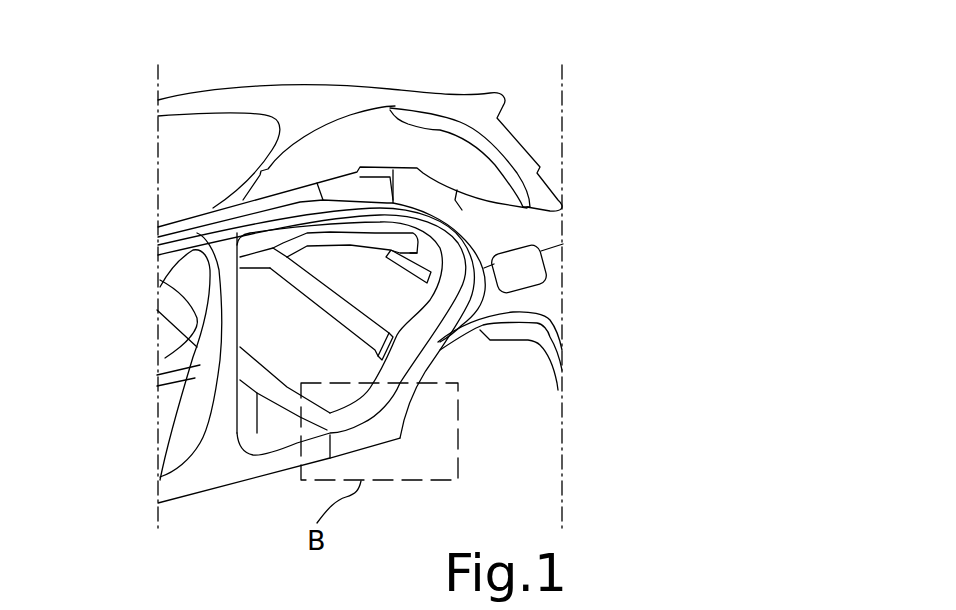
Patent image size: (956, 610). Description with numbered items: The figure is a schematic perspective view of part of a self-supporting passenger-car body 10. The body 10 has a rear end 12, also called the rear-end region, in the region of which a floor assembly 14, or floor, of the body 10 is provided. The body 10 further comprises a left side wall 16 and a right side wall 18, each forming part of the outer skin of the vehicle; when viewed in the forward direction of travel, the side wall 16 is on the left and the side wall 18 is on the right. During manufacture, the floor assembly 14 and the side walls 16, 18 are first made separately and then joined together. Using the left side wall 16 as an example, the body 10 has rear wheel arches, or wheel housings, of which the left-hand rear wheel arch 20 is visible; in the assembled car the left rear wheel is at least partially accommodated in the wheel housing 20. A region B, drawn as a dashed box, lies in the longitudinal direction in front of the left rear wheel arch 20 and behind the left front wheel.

The body 10 is at (430, 118).
The rear end 12 is at (508, 425).
The floor assembly 14 is at (163, 380).
The left side wall 16 is at (438, 209).
The right side wall 18 is at (238, 100).
The left-hand rear wheel arch 20 is at (508, 373).